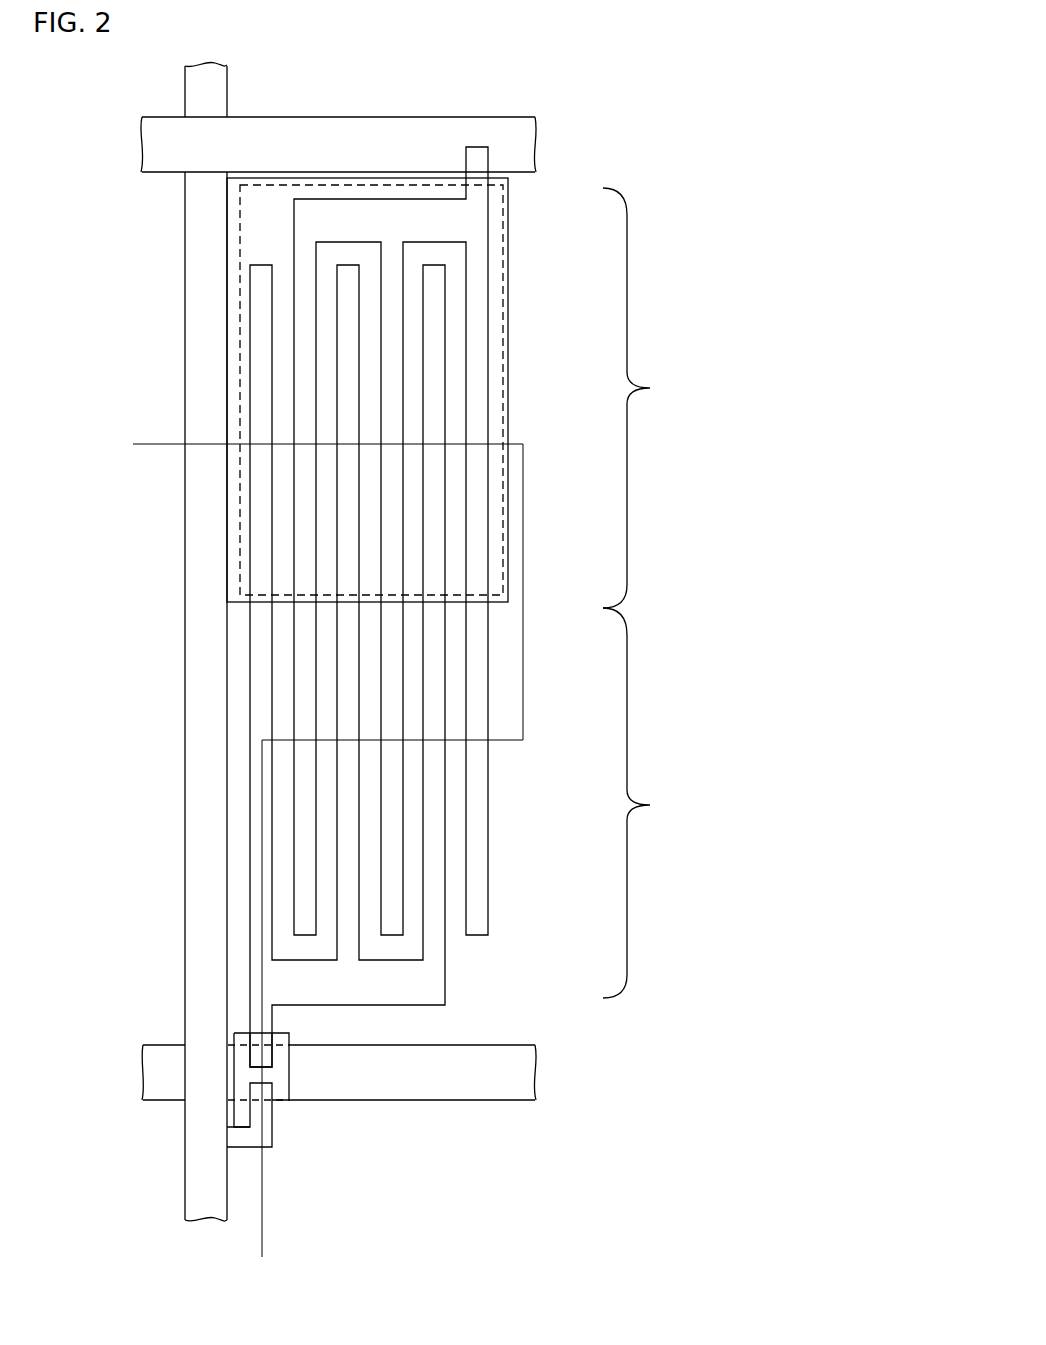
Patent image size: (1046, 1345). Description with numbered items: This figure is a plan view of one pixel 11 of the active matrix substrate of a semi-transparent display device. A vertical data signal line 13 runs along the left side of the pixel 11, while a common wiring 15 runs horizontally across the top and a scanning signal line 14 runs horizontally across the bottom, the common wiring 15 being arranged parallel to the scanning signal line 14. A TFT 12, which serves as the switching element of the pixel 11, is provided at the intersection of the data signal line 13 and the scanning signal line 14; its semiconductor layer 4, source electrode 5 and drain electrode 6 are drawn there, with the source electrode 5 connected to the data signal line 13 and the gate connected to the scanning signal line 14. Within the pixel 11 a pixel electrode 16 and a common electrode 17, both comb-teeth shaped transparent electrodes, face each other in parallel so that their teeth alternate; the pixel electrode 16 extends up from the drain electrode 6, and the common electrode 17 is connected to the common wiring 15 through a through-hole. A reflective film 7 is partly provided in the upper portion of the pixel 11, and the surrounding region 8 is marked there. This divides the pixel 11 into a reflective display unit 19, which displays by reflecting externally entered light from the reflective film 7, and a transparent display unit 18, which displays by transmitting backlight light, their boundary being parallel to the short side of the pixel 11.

The semiconductor layer 4 is at (289, 1108).
The source electrode 5 is at (281, 1106).
The drain electrode 6 is at (262, 1048).
The reflective film 7 is at (455, 560).
The reflective electrode region 8 is at (510, 398).
The pixel 11 is at (528, 66).
The TFT 12 is at (289, 1069).
The data signal line 13 is at (203, 729).
The scanning signal line 14 is at (483, 1090).
The common wiring 15 is at (377, 127).
The pixel electrode 16 is at (423, 988).
The common electrode 17 is at (433, 230).
The transparent display unit 18 is at (753, 803).
The reflective display unit 19 is at (753, 398).